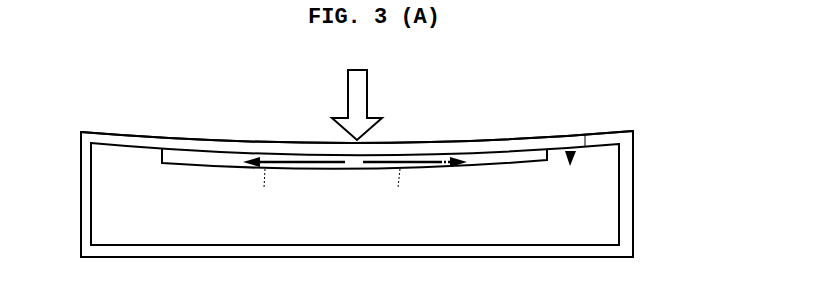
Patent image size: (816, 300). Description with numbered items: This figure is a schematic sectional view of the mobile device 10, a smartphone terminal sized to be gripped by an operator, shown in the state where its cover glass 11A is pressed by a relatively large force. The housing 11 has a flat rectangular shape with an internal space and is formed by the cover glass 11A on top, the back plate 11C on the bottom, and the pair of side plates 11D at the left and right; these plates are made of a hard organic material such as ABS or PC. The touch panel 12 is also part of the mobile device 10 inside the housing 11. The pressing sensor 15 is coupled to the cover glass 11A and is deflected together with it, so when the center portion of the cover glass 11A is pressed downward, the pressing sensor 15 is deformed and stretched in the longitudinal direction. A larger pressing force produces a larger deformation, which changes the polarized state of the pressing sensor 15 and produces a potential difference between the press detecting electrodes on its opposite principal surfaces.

The mobile device 10 is at (140, 117).
The housing 11 is at (632, 130).
The cover glass 11A is at (425, 142).
The back plate 11C is at (468, 248).
The side plates 11D is at (79, 192).
The touch panel 12 is at (571, 150).
The pressing sensor 15 is at (531, 155).